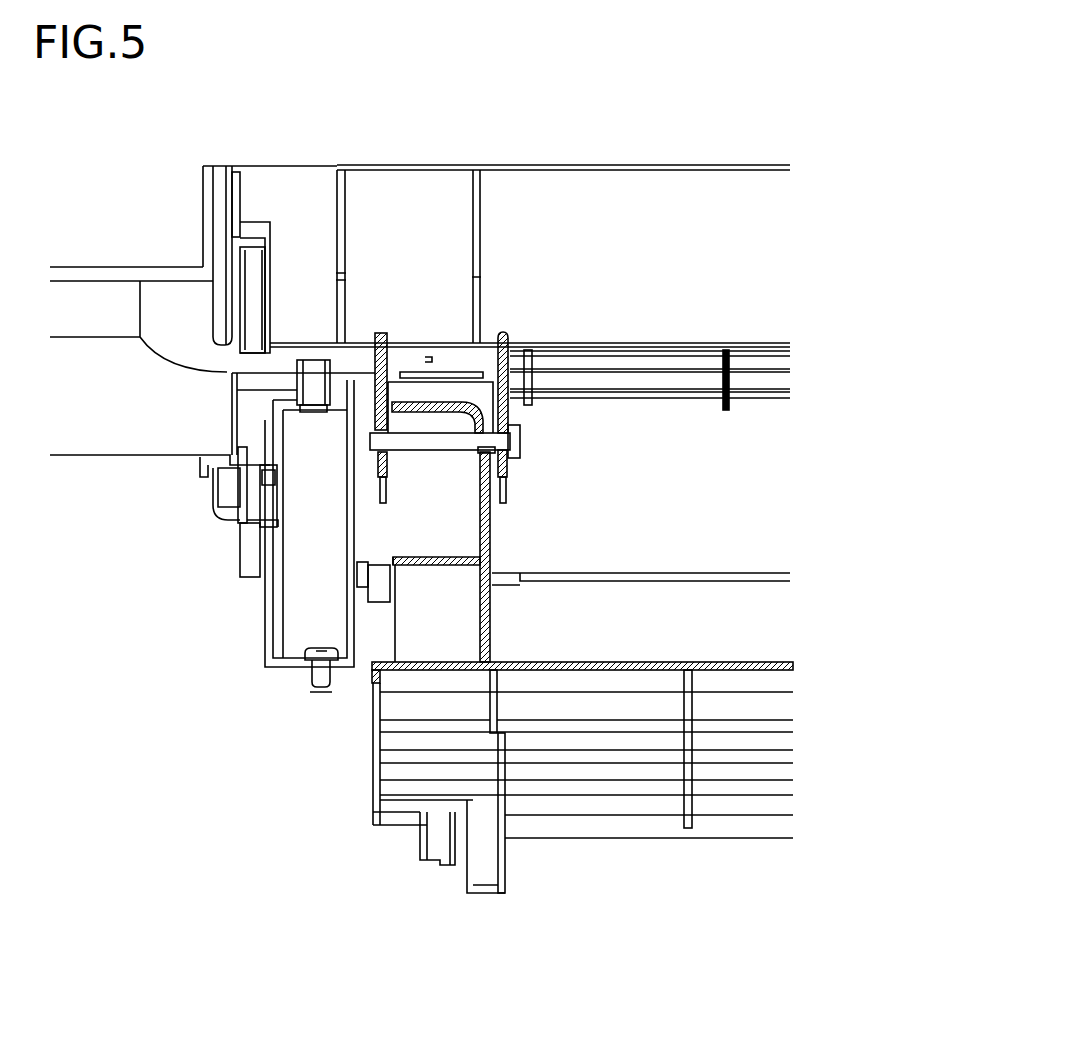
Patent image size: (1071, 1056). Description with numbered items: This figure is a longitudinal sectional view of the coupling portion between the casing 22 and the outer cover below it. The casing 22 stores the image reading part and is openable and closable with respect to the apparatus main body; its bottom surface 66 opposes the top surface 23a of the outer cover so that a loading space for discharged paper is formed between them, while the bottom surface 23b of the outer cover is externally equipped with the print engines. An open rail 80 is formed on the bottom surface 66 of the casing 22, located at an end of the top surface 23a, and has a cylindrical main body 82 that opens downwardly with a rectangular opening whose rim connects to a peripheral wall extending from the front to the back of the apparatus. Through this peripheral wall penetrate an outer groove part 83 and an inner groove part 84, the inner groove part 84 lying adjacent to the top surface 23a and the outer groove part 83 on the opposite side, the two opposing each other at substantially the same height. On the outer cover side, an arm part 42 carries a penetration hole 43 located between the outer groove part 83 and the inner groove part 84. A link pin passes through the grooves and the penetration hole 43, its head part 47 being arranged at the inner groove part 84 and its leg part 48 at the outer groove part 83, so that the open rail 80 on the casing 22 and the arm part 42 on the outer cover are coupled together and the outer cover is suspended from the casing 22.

The casing 22 is at (587, 227).
The top surface 23a is at (752, 660).
The bottom surface 23b is at (613, 780).
The arm part 42 is at (492, 542).
The penetration hole 43 is at (487, 442).
The head part 47 is at (513, 428).
The leg part 48 is at (372, 447).
The bottom surface 66 is at (648, 348).
The open rail 80 is at (383, 317).
The cylindrical main body 82 is at (510, 390).
The outer groove part 83 is at (372, 443).
The inner groove part 84 is at (517, 443).